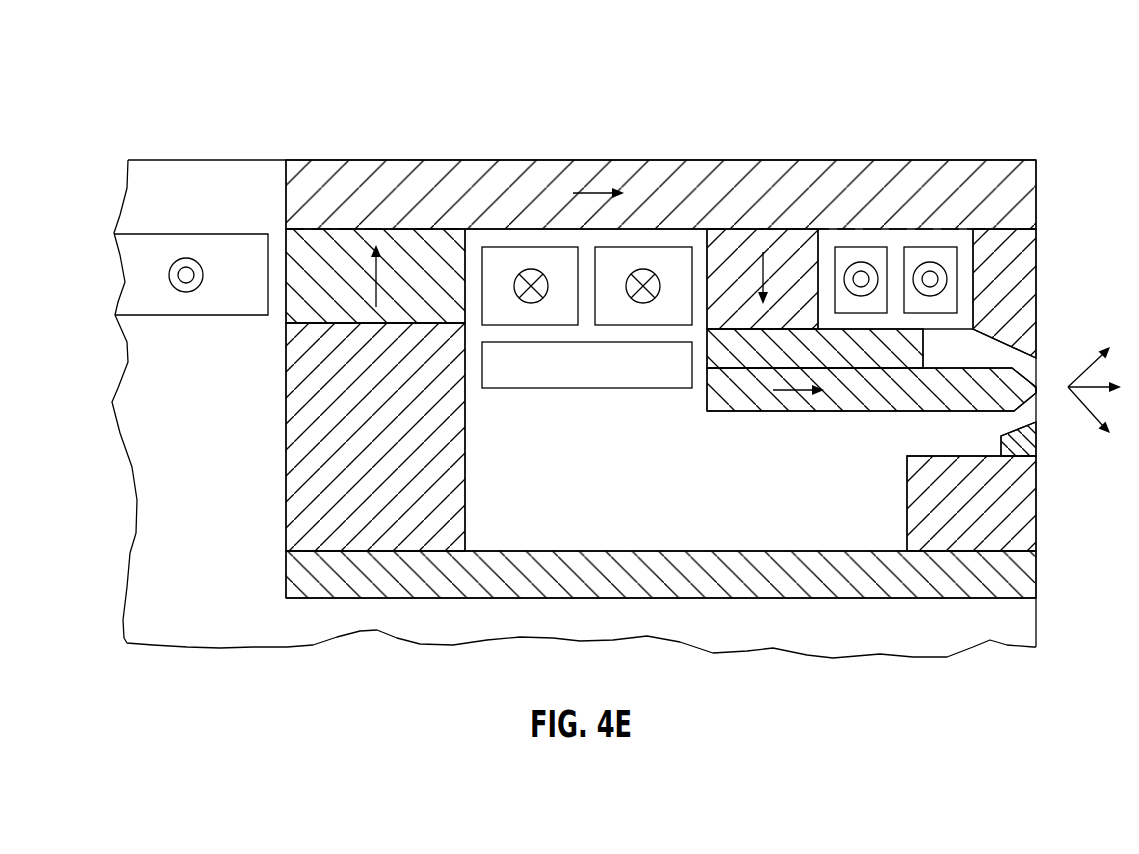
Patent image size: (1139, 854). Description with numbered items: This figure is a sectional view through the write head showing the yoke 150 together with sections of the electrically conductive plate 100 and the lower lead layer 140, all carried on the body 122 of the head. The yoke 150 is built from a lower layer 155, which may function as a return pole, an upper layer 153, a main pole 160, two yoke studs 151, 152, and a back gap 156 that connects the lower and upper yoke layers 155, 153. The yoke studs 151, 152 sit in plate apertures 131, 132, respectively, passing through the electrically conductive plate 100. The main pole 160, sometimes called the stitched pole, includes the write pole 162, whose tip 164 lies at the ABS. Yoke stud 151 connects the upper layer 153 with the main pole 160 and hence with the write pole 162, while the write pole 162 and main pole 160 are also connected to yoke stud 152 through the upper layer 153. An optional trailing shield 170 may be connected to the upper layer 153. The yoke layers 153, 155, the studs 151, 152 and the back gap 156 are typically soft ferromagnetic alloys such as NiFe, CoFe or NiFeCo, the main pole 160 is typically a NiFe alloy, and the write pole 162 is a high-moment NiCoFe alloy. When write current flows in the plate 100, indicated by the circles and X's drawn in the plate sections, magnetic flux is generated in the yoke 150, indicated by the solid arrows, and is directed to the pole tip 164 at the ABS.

The electrically conductive plate 100 is at (142, 285).
The slider substrate 122 is at (162, 555).
The plate aperture 131 is at (705, 228).
The plate aperture 132 is at (276, 233).
The lower lead layer 140 is at (620, 390).
The yoke 150 is at (136, 106).
The yoke stud 151 is at (757, 250).
The yoke stud 152 is at (350, 234).
The upper layer 153 is at (517, 177).
The lower layer 155 is at (1018, 577).
The back gap 156 is at (292, 365).
The main pole 160 is at (742, 358).
The write pole 162 is at (880, 403).
The tip 164 is at (1036, 388).
The trailing shield 170 is at (1010, 296).
The air bearing surface ABS is at (1038, 623).